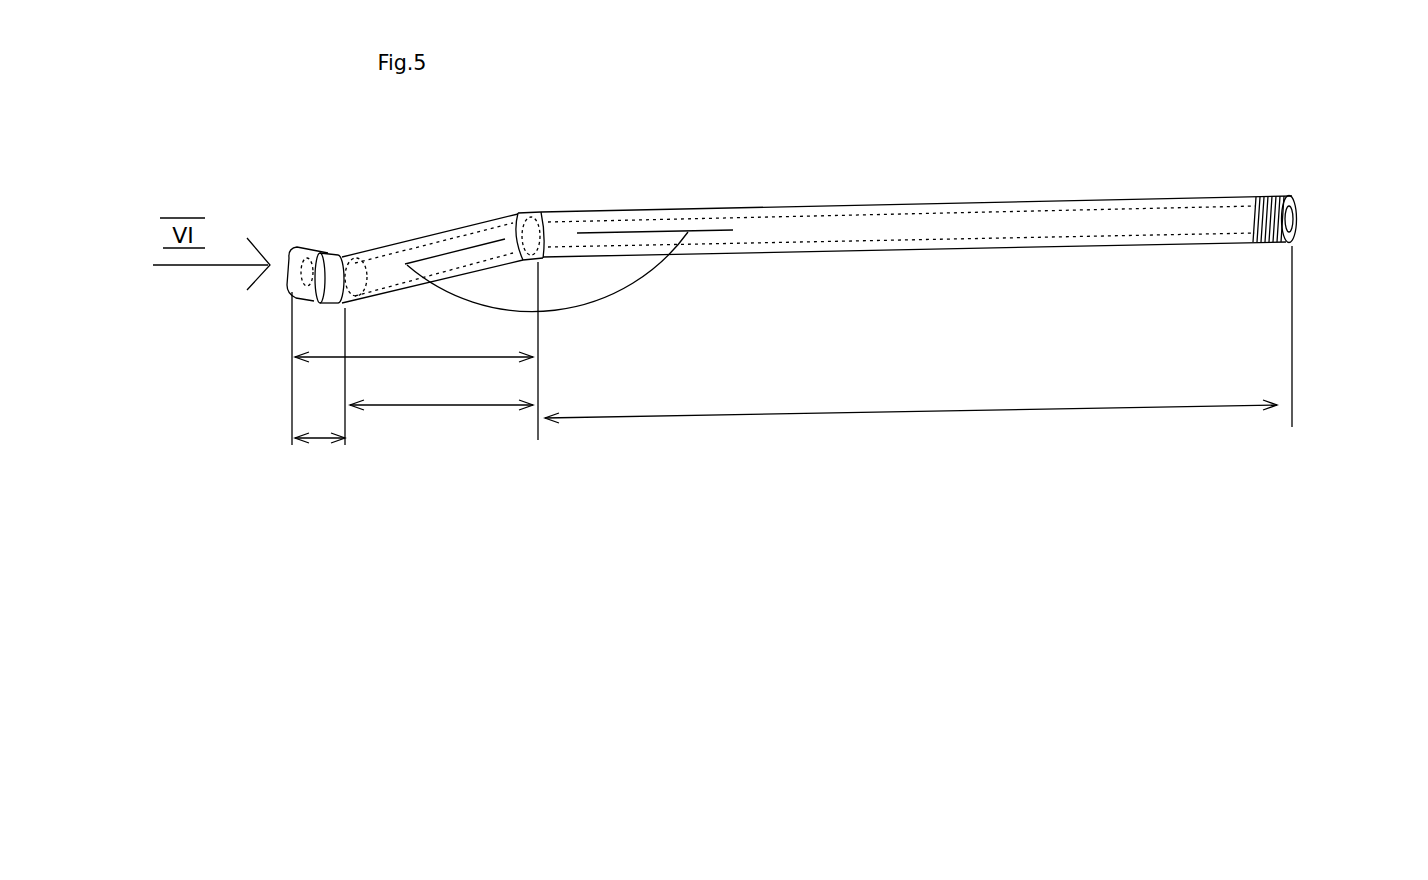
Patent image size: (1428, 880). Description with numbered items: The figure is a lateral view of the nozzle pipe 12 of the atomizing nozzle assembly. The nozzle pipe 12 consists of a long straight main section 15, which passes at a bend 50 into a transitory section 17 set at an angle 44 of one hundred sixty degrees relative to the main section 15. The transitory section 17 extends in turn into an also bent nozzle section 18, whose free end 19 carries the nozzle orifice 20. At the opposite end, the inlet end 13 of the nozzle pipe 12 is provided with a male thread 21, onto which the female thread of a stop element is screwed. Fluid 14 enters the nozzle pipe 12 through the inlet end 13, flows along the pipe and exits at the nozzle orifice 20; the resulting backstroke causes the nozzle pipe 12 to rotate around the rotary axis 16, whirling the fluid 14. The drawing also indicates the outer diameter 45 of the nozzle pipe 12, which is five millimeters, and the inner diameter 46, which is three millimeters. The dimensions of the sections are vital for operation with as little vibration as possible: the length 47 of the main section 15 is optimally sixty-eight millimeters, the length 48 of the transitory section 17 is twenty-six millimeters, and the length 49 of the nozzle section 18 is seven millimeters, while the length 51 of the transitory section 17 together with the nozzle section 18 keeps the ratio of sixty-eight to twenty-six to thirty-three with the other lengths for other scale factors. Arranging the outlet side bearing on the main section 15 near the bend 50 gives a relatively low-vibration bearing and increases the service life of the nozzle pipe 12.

The nozzle pipe 12 is at (813, 188).
The inlet end 13 is at (1288, 246).
The fluid 14 is at (1290, 217).
The main section 15 is at (848, 259).
The rotary axis 16 is at (667, 229).
The transitory section 17 is at (470, 281).
The nozzle section 18 is at (313, 306).
The free end 19 is at (307, 244).
The nozzle orifice 20 is at (292, 273).
The male thread 21 is at (1259, 241).
The angle 44 is at (560, 319).
The outer diameter 45 is at (946, 199).
The inner diameter 46 is at (1059, 201).
The length of main section 47 is at (917, 413).
The length of transitory section 48 is at (467, 406).
The length of nozzle section 49 is at (315, 439).
The bend 50 is at (537, 212).
The length of transitory section and nozzle section 51 is at (402, 358).